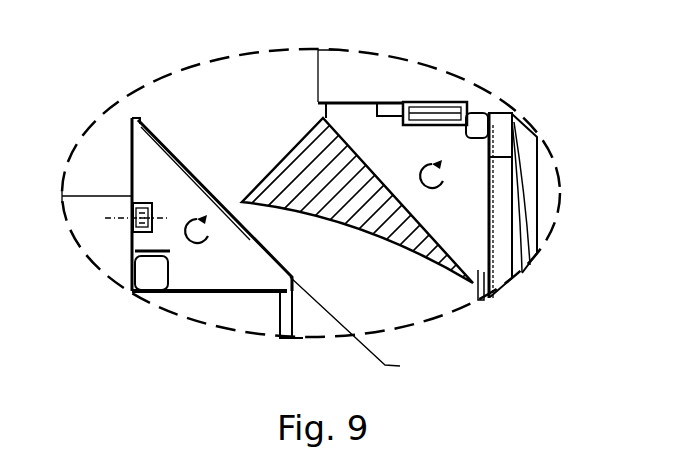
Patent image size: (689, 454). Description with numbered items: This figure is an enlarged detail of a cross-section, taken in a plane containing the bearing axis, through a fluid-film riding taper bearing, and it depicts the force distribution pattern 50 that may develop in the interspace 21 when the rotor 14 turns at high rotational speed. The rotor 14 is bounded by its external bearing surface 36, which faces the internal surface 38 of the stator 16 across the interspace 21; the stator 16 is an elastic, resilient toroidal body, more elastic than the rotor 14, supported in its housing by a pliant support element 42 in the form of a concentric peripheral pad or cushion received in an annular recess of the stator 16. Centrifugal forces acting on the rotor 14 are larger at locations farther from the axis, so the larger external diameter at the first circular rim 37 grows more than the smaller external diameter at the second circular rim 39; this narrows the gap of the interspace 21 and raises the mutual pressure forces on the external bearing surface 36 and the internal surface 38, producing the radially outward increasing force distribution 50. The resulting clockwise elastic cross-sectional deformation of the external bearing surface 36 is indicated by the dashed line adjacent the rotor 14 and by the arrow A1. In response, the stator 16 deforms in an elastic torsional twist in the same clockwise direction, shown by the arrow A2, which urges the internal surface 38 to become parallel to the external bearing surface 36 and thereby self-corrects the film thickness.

The rotor 14 is at (213, 280).
The stator 16 is at (474, 226).
The interspace 21 is at (267, 93).
The external bearing surface 36 is at (275, 262).
The first circular rim 37 is at (137, 119).
The internal surface 38 is at (440, 243).
The second circular rim 39 is at (368, 331).
The pliant support element 42 is at (132, 293).
The force distribution pattern 50 is at (297, 173).
The arrow indicating clockwise elastic deformation of the rotor A1 is at (193, 215).
The arrow indicating torsional twist of the stator A2 is at (413, 155).